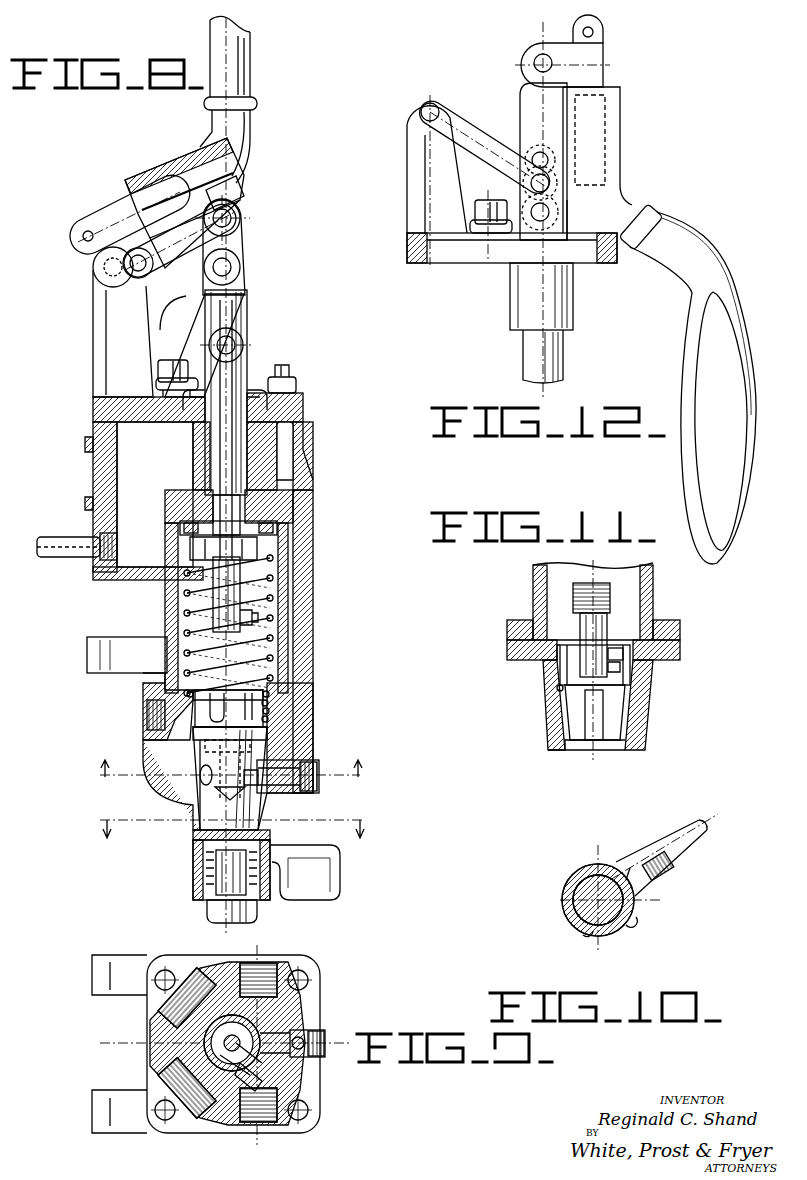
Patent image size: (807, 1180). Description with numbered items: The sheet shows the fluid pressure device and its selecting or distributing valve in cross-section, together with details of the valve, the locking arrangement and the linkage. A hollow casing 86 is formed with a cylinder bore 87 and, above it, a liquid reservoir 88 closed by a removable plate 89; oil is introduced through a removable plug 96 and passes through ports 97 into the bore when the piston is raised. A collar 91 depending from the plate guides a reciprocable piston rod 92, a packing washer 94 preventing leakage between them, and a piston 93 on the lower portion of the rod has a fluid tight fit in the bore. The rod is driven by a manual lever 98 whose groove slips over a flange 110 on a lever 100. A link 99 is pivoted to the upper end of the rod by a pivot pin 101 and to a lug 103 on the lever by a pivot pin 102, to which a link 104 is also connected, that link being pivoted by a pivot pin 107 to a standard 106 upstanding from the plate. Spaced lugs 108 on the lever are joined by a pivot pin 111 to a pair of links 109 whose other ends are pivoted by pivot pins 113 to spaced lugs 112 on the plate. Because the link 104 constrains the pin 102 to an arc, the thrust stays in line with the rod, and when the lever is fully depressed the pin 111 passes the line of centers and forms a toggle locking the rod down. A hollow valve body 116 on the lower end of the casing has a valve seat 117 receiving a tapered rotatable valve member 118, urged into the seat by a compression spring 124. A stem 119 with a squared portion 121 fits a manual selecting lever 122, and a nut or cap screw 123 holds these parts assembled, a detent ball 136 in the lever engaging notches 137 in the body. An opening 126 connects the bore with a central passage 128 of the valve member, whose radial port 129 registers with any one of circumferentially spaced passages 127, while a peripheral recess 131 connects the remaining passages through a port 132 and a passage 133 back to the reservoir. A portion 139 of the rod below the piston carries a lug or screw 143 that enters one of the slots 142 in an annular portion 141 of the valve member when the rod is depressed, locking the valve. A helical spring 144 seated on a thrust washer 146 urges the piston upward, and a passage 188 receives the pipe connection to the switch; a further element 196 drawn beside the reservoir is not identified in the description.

In FIG. 8, the hollow body or casing 86 is at (290, 548).
In FIG. 11, the hollow body or casing 86 is at (652, 588).
In FIG. 8, the cylinder bore 87 is at (272, 568).
In FIG. 11, the cylinder bore 87 is at (630, 604).
In FIG. 8, the liquid reservoir 88 is at (130, 470).
In FIG. 8, the removable plate 89 is at (100, 410).
In FIG. 12, the removable plate 89 is at (457, 256).
In FIG. 8, the collar 91 is at (255, 451).
In FIG. 12, the collar 91 is at (512, 307).
In FIG. 8, the piston rod 92 is at (232, 437).
In FIG. 12, the piston rod 92 is at (525, 349).
In FIG. 8, the piston 93 is at (275, 526).
In FIG. 8, the packing washer 94 is at (270, 378).
In FIG. 8, the removable plug or closure 96 is at (158, 372).
In FIG. 12, the removable plug or closure 96 is at (476, 209).
In FIG. 8, the ports 97 is at (120, 560).
In FIG. 8, the manual lever 98 is at (236, 80).
In FIG. 12, the manual lever 98 is at (694, 344).
In FIG. 8, the link 99 is at (241, 240).
In FIG. 12, the link 99 is at (525, 181).
In FIG. 8, the lever 100 is at (145, 188).
In FIG. 8, the pivot pin 101 is at (233, 267).
In FIG. 12, the pivot pin 101 is at (548, 212).
In FIG. 8, the pivot pin 102 is at (231, 214).
In FIG. 12, the pivot pin 102 is at (546, 162).
In FIG. 8, the lug 103 is at (228, 193).
In FIG. 12, the lug 103 is at (567, 140).
In FIG. 8, the link 104 is at (200, 249).
In FIG. 12, the link 104 is at (473, 110).
In FIG. 8, the standard 106 is at (100, 313).
In FIG. 12, the standard 106 is at (412, 150).
In FIG. 8, the pivot pin 107 is at (104, 277).
In FIG. 12, the pivot pin 107 is at (424, 114).
In FIG. 8, the spaced lugs 108 is at (111, 226).
In FIG. 12, the spaced lugs 108 is at (590, 60).
In FIG. 8, the links 109 is at (165, 322).
In FIG. 12, the links 109 is at (527, 98).
In FIG. 8, the flange 110 is at (178, 165).
In FIG. 8, the pivot pin 111 is at (130, 262).
In FIG. 12, the pivot pin 111 is at (535, 62).
In FIG. 8, the spaced lugs 112 is at (250, 385).
In FIG. 12, the spaced lugs 112 is at (566, 227).
In FIG. 8, the pivot pins 113 is at (240, 340).
In FIG. 12, the pivot pins 113 is at (547, 183).
In FIG. 8, the hollow valve body 116 is at (314, 721).
In FIG. 9, the hollow valve body 116 is at (290, 995).
In FIG. 11, the hollow valve body 116 is at (640, 688).
In FIG. 10, the hollow valve body 116 is at (566, 905).
In FIG. 8, the valve seat 117 is at (272, 746).
In FIG. 9, the valve seat 117 is at (290, 1015).
In FIG. 11, the valve seat 117 is at (645, 726).
In FIG. 10, the valve seat 117 is at (570, 885).
In FIG. 8, the tapered rotatable valve member 118 is at (200, 748).
In FIG. 9, the tapered rotatable valve member 118 is at (205, 1040).
In FIG. 11, the tapered rotatable valve member 118 is at (622, 706).
In FIG. 10, the tapered rotatable valve member 118 is at (585, 870).
In FIG. 8, the stem 119 is at (228, 880).
In FIG. 8, the squared portion 121 is at (210, 848).
In FIG. 10, the squared portion 121 is at (595, 866).
In FIG. 8, the manual selecting lever 122 is at (327, 871).
In FIG. 10, the manual selecting lever 122 is at (690, 845).
In FIG. 8, the nut or cap screw 123 is at (212, 912).
In FIG. 8, the compression spring 124 is at (215, 866).
In FIG. 8, the opening 126 is at (270, 690).
In FIG. 11, the opening 126 is at (556, 668).
In FIG. 9, the discharge openings or passages 127 is at (232, 995).
In FIG. 8, the central passage 128 is at (215, 789).
In FIG. 9, the central passage 128 is at (258, 1060).
In FIG. 11, the central passage 128 is at (586, 706).
In FIG. 8, the radially extending port 129 is at (200, 773).
In FIG. 9, the radially extending port 129 is at (215, 1050).
In FIG. 8, the recess or port 131 is at (275, 800).
In FIG. 9, the recess or port 131 is at (262, 1070).
In FIG. 8, the port 132 is at (305, 762).
In FIG. 9, the port 132 is at (308, 1031).
In FIG. 8, the passage 133 is at (296, 497).
In FIG. 9, the passage 133 is at (302, 1054).
In FIG. 10, the detent ball 136 is at (652, 882).
In FIG. 10, the notches or recesses 137 is at (634, 920).
In FIG. 8, the portion of piston rod 139 is at (232, 600).
In FIG. 11, the portion of piston rod 139 is at (578, 615).
In FIG. 8, the upstanding annular portion 141 is at (190, 697).
In FIG. 11, the upstanding annular portion 141 is at (558, 652).
In FIG. 8, the slots 142 is at (188, 716).
In FIG. 11, the slots 142 is at (623, 652).
In FIG. 8, the lug or screw 143 is at (254, 618).
In FIG. 11, the lug or screw 143 is at (618, 670).
In FIG. 8, the helical spring 144 is at (272, 581).
In FIG. 8, the thrust washer 146 is at (270, 710).
In FIG. 11, the thrust washer 146 is at (558, 684).
In FIG. 8, the passage 188 is at (160, 715).
In FIG. 8, the pipe 196 is at (72, 560).